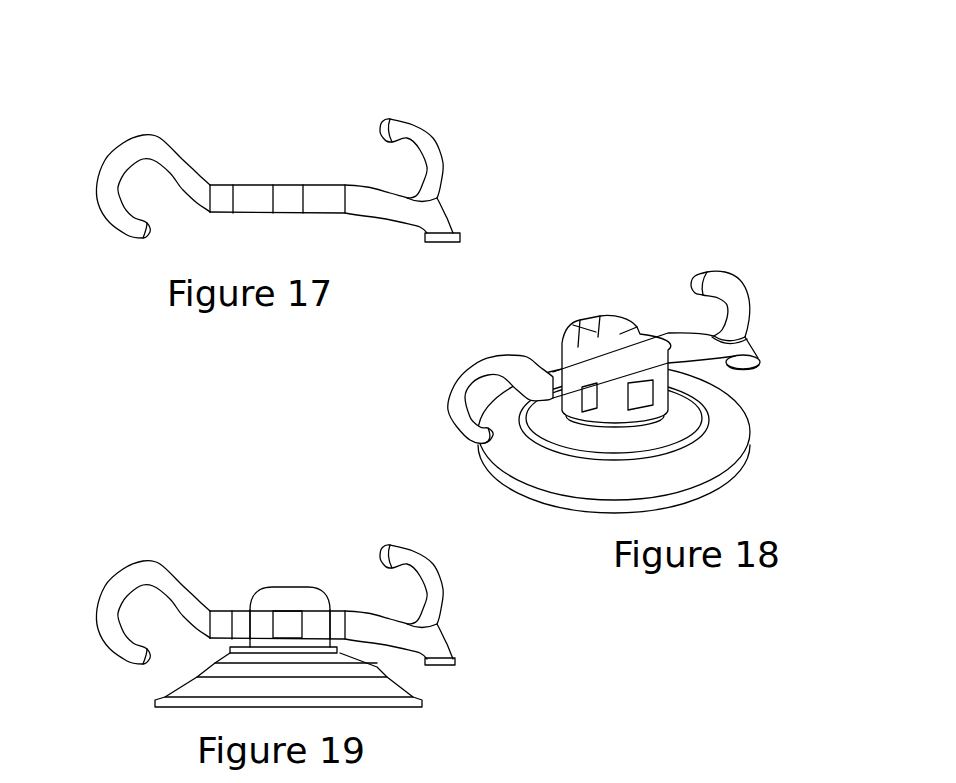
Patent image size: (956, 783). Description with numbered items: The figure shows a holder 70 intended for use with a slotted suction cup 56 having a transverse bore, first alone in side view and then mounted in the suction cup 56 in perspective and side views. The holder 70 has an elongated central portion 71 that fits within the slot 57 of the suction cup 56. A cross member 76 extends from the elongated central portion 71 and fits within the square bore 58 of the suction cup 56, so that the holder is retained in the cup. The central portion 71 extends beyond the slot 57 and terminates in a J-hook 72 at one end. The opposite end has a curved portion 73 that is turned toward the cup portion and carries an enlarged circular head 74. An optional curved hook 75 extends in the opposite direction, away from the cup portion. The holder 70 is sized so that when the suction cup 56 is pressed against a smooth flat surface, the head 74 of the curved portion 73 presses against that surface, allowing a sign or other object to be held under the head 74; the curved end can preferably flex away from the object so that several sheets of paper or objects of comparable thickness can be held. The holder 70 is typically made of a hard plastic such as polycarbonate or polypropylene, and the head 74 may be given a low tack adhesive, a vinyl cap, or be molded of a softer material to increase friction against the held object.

In FIG. 18, the suction cup 56 is at (717, 460).
In FIG. 19, the suction cup 56 is at (197, 690).
In FIG. 18, the slot 57 is at (607, 340).
In FIG. 19, the square bore 58 is at (283, 625).
In FIG. 17, the holder 70 is at (208, 117).
In FIG. 18, the holder 70 is at (495, 337).
In FIG. 19, the holder 70 is at (352, 590).
In FIG. 17, the elongated central portion 71 is at (257, 190).
In FIG. 18, the elongated central portion 71 is at (688, 333).
In FIG. 19, the elongated central portion 71 is at (359, 634).
In FIG. 17, the J-hook 72 is at (130, 137).
In FIG. 18, the J-hook 72 is at (457, 412).
In FIG. 19, the J-hook 72 is at (153, 591).
In FIG. 17, the curved portion 73 is at (440, 213).
In FIG. 18, the curved portion 73 is at (745, 347).
In FIG. 17, the enlarged circular head 74 is at (455, 233).
In FIG. 18, the enlarged circular head 74 is at (762, 367).
In FIG. 19, the enlarged circular head 74 is at (453, 683).
In FIG. 17, the curved hook 75 is at (413, 128).
In FIG. 18, the curved hook 75 is at (728, 283).
In FIG. 19, the curved hook 75 is at (442, 581).
In FIG. 17, the cross member 76 is at (293, 203).